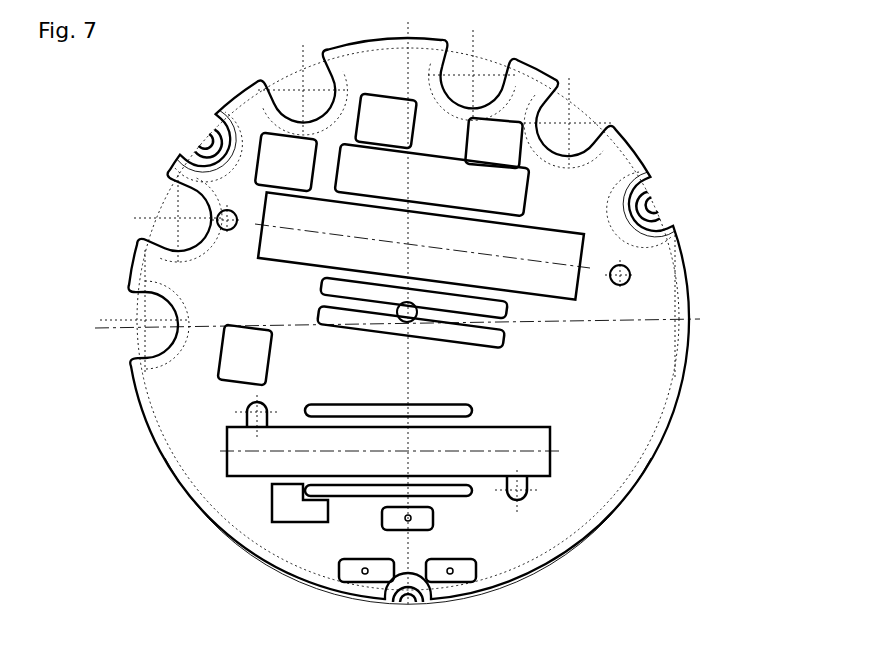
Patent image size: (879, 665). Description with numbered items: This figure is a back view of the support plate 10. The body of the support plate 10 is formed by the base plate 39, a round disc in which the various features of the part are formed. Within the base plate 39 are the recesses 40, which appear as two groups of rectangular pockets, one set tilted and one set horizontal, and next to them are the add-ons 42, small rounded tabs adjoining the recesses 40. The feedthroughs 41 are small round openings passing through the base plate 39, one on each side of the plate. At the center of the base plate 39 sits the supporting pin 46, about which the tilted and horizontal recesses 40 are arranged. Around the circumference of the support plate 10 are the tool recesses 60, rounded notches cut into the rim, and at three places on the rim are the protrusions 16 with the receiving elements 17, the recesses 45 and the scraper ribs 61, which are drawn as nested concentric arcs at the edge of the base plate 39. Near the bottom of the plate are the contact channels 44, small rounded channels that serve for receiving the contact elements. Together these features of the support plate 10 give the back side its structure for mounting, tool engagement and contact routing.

The support plate 10 is at (706, 152).
The protrusions 16 is at (192, 164).
The receiving elements 17 is at (198, 143).
The base plate 39 is at (600, 390).
The recesses 40 is at (556, 256).
The feedthroughs 41 is at (222, 220).
The add-ons 42 is at (237, 423).
The contact channels 44 is at (385, 520).
The recesses 45 is at (205, 138).
The supporting pin 46 is at (418, 318).
The tool recesses 60 is at (300, 88).
The scraper ribs 61 is at (224, 126).